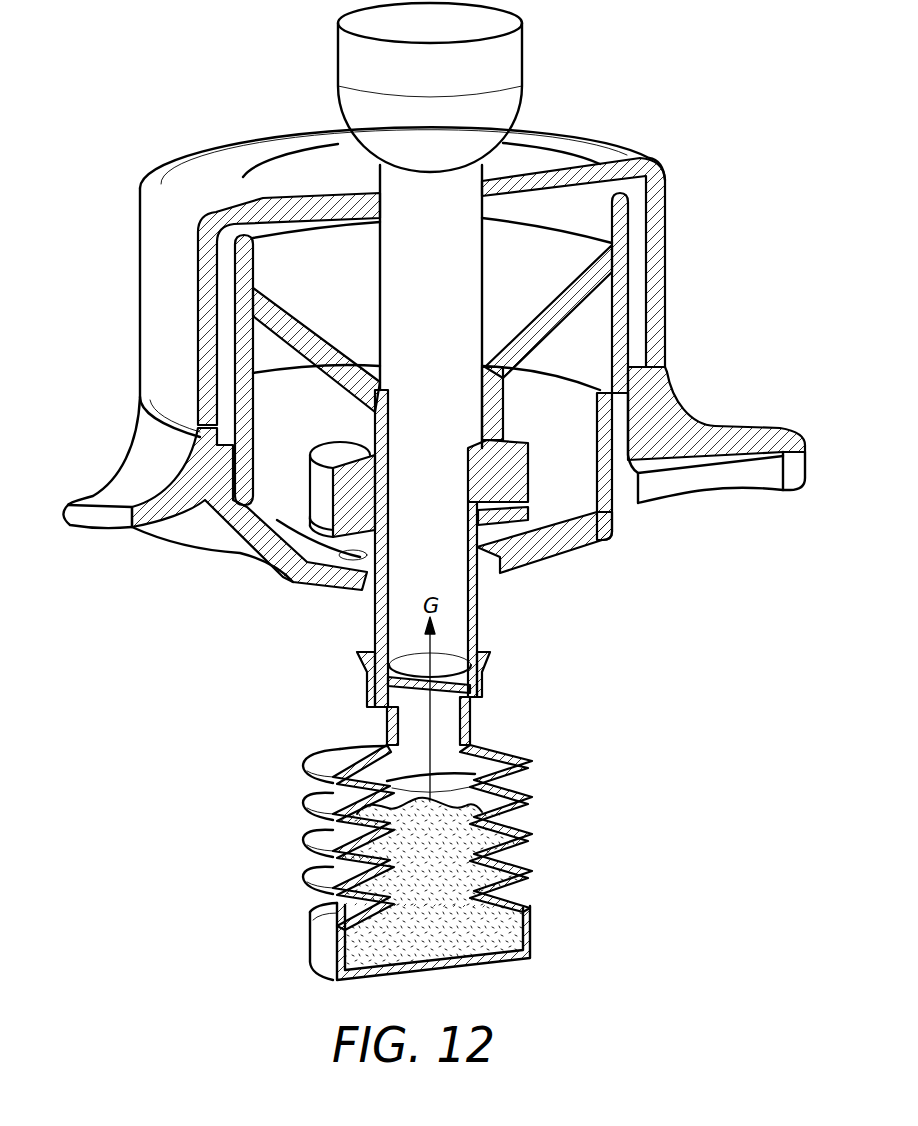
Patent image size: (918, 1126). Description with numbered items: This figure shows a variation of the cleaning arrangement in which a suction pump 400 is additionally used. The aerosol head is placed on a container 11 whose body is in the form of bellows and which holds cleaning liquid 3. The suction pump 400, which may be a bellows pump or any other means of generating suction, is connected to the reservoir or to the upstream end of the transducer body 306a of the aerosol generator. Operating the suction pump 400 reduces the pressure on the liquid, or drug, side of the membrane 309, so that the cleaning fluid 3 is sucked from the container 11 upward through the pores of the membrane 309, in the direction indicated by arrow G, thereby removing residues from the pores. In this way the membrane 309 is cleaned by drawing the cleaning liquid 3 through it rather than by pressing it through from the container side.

The suction pump 400 is at (512, 53).
The upstream end of the transducer body 306a is at (299, 562).
The membrane 309 is at (420, 694).
The container 11 is at (524, 791).
The cleaning liquid 3 is at (495, 930).